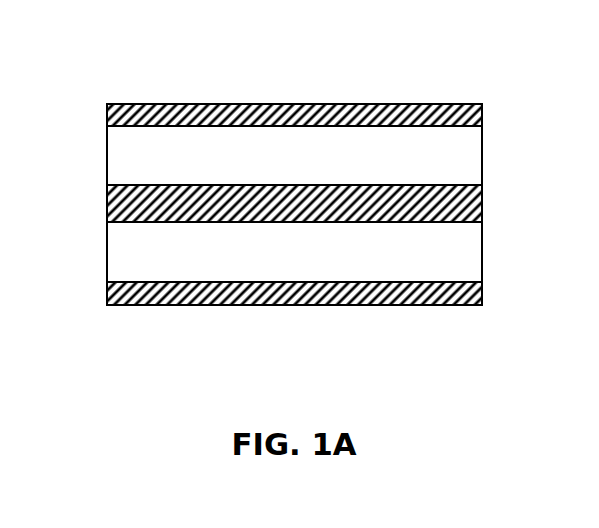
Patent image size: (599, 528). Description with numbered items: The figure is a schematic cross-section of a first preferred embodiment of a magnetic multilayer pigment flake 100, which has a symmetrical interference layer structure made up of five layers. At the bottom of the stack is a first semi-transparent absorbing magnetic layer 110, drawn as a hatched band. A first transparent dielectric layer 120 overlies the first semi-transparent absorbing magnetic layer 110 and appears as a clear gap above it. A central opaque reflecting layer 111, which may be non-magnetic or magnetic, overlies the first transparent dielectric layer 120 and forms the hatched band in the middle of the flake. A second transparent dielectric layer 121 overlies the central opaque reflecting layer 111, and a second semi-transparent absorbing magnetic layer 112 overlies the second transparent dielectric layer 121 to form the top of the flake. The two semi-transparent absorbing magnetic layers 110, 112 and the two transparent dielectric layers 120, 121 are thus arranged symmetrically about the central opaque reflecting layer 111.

The pigment flake 100 is at (120, 62).
The first semi-transparent absorbing magnetic layer 110 is at (482, 293).
The central opaque reflecting layer 111 is at (482, 203).
The second semi-transparent absorbing magnetic layer 112 is at (482, 113).
The first transparent dielectric layer 120 is at (107, 252).
The second transparent dielectric layer 121 is at (107, 155).